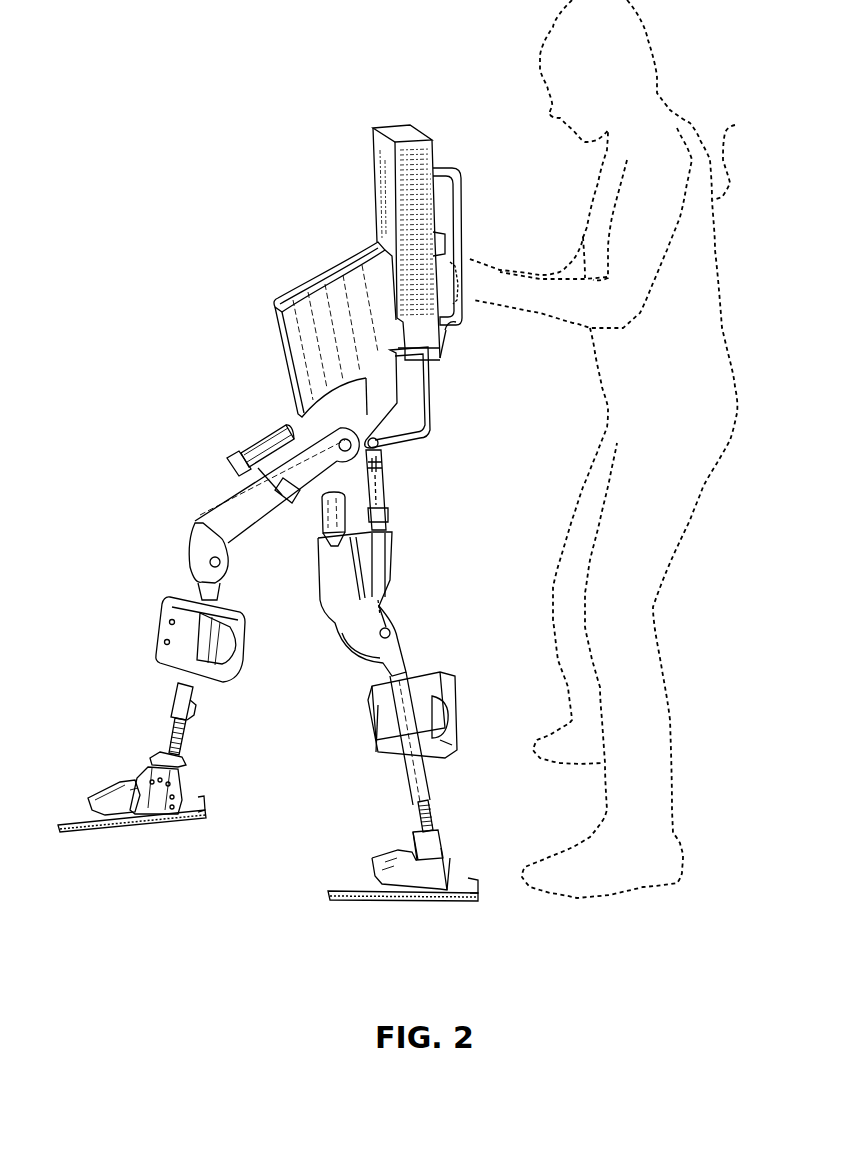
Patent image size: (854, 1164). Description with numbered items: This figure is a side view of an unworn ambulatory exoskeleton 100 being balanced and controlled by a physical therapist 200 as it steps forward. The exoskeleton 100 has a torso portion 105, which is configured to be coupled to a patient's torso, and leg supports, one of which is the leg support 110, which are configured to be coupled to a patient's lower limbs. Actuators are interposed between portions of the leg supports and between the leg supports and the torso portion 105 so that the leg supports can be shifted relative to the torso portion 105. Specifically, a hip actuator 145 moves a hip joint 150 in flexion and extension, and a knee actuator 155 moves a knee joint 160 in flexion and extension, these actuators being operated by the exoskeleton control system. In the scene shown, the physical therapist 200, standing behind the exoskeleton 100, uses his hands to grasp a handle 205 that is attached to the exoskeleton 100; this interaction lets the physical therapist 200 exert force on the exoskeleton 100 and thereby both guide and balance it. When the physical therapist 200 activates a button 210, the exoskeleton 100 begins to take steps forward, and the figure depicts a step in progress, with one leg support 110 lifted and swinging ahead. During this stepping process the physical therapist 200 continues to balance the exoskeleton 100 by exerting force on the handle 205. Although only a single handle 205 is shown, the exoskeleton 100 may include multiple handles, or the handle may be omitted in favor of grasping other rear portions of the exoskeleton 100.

The exoskeleton 100 is at (373, 168).
The torso portion 105 is at (305, 352).
The leg support 110 is at (380, 723).
The hip actuator 145 is at (416, 428).
The hip joint 150 is at (392, 455).
The knee actuator 155 is at (338, 588).
The knee joint 160 is at (376, 636).
The physical therapist 200 is at (620, 449).
The handle 205 is at (459, 323).
The button 210 is at (445, 232).